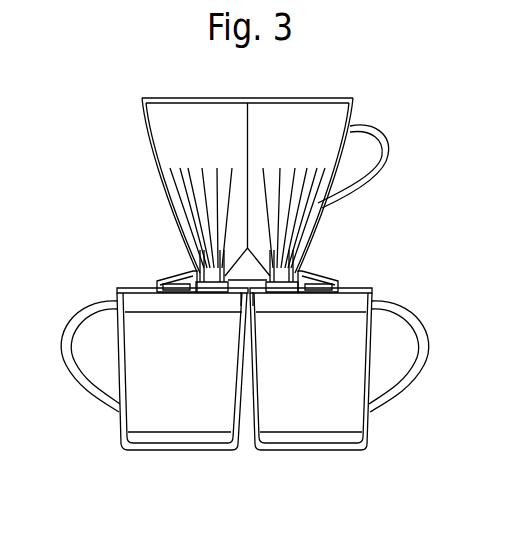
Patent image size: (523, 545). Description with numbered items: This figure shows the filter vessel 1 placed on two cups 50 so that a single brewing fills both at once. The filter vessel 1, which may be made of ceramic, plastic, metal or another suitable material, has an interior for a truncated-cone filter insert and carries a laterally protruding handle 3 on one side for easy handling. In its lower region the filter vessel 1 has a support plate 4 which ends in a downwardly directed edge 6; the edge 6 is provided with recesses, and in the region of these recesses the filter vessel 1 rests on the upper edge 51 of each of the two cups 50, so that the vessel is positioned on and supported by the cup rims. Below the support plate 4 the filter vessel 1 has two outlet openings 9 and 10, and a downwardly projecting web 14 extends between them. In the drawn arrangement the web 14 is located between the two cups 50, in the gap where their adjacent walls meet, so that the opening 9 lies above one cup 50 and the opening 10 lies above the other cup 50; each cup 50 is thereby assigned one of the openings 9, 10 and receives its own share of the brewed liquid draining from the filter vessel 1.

The filter vessel 1 is at (145, 122).
The handle 3 is at (385, 129).
The support plate 4 is at (173, 277).
The downwardly directed edge 6 is at (157, 287).
The opening 9 is at (193, 262).
The opening 10 is at (300, 263).
The downwardly projecting web 14 is at (250, 296).
The cup 50 is at (162, 441).
The upper edge 51 is at (117, 292).